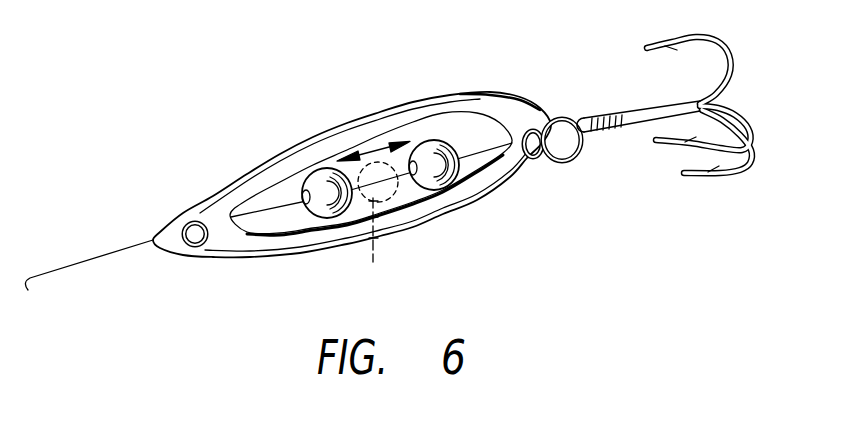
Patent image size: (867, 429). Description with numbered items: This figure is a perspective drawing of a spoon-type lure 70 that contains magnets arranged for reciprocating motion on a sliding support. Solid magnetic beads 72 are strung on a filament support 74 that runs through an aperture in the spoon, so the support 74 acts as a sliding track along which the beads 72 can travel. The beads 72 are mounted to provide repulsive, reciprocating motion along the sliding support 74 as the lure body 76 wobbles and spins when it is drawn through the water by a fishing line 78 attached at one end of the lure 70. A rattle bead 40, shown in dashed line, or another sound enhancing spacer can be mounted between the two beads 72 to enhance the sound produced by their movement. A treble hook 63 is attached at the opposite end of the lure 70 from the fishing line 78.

The spoon-type lure 70 is at (212, 149).
The solid magnetic beads 72 is at (333, 216).
The filament support 74 is at (473, 156).
The lure body 76 is at (520, 189).
The fishing line 78 is at (87, 262).
The rattle bead 40 is at (372, 262).
The treble hooks 63 is at (752, 157).